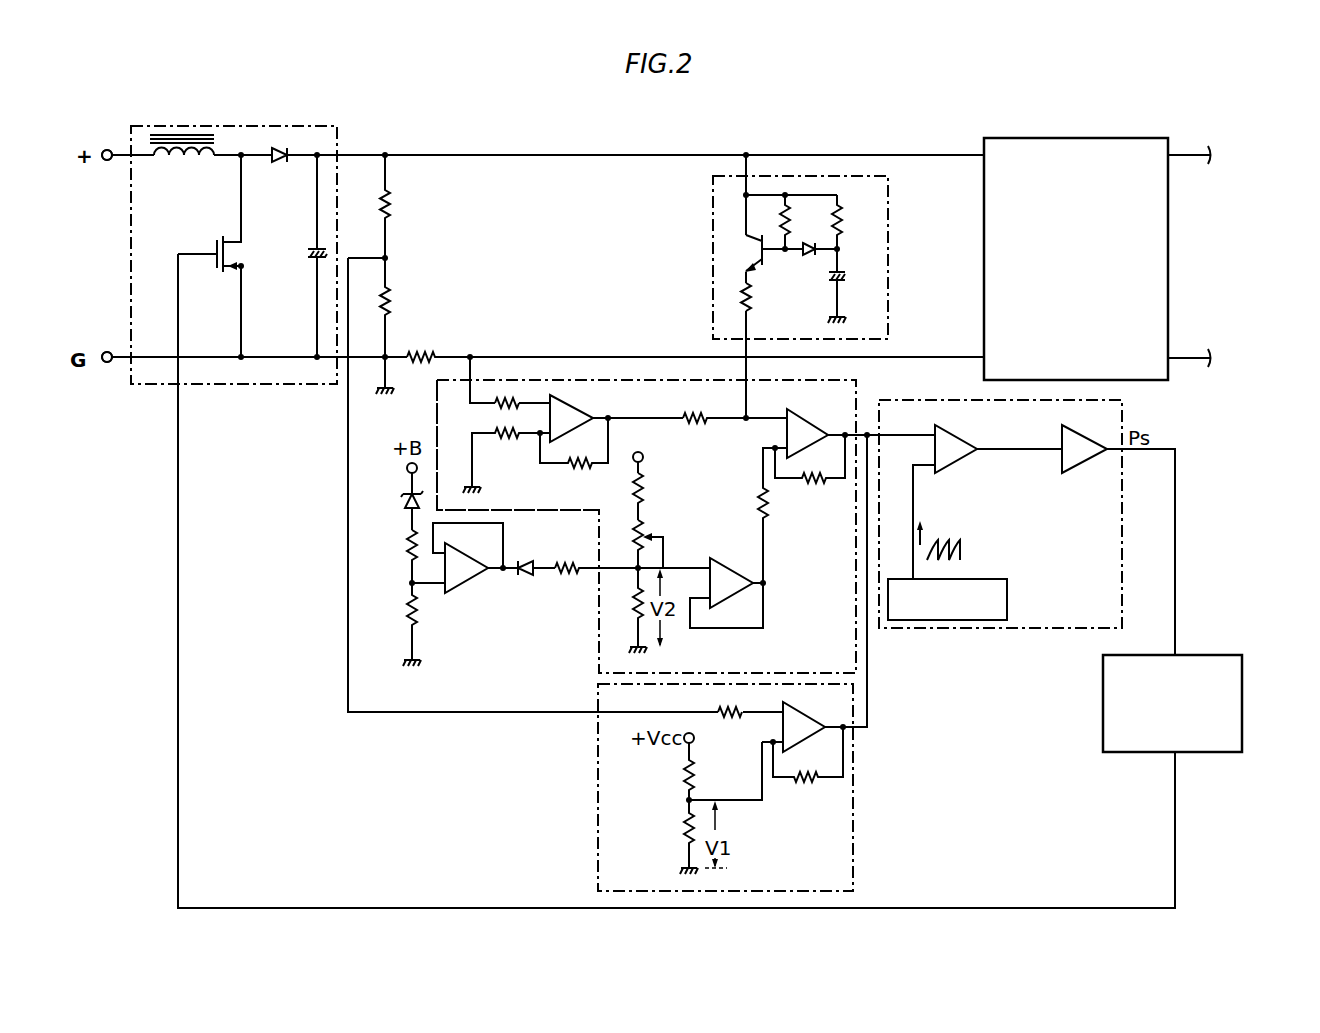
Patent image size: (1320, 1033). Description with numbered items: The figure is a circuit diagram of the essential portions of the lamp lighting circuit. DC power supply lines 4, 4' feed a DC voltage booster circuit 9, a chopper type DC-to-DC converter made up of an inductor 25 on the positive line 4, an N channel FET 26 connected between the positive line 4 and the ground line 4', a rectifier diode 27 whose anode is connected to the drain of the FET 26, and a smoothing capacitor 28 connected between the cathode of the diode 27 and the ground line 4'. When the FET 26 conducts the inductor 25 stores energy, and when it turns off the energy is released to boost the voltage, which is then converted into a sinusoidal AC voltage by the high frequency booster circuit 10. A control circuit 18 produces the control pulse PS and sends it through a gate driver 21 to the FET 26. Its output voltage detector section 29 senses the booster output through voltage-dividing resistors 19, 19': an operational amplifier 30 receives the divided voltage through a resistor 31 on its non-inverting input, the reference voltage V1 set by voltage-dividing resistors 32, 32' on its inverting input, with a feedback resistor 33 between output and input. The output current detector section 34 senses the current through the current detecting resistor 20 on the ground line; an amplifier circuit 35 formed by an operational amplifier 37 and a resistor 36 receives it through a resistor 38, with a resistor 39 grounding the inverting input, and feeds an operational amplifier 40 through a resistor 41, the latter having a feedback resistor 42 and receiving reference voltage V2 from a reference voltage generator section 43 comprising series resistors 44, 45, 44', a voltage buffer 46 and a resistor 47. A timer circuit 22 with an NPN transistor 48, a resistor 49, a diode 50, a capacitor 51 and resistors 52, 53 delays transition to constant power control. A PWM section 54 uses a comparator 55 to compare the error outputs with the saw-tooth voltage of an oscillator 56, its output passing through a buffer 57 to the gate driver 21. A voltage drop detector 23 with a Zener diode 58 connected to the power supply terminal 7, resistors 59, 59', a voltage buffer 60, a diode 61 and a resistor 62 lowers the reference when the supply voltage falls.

The positive line 4 is at (109, 123).
The ground line 4' is at (108, 401).
The power supply terminal 7 is at (406, 469).
The DC voltage booster circuit 9 is at (243, 126).
The high frequency booster circuit 10 is at (1085, 137).
The control circuit 18 is at (430, 757).
The voltage-dividing resistor 19 is at (412, 206).
The voltage-dividing resistor 19' is at (413, 326).
The current detecting resistor 20 is at (426, 352).
The gate driver 21 is at (1242, 688).
The timer circuit 22 is at (888, 236).
The voltage drop detector 23 is at (448, 626).
The inductor 25 is at (181, 162).
The N channel FET 26 is at (245, 249).
The rectifier diode 27 is at (283, 163).
The smoothing capacitor 28 is at (312, 262).
The output voltage detector section 29 is at (598, 800).
The operational amplifier 30 is at (778, 745).
The resistor 31 is at (731, 716).
The voltage-dividing resistor 32 is at (662, 774).
The voltage-dividing resistor 32' is at (663, 837).
The feedback resistor 33 is at (806, 784).
The output current detector section 34 is at (436, 398).
The amplifier circuit 35 is at (612, 418).
The resistor 36 is at (573, 466).
The operational amplifier 37 is at (565, 398).
The resistor 38 is at (495, 404).
The resistor 39 is at (512, 436).
The operational amplifier 40 is at (810, 424).
The resistor 41 is at (697, 424).
The feedback resistor 42 is at (815, 480).
The reference voltage generator section 43 is at (656, 508).
The resistor 44 is at (615, 496).
The resistor 44' is at (600, 624).
The variable resistor 45 is at (698, 536).
The voltage buffer 46 is at (733, 568).
The resistor 47 is at (768, 516).
The NPN transistor 48 is at (769, 257).
The resistor 49 is at (752, 309).
The diode 50 is at (812, 243).
The capacitor 51 is at (842, 281).
The resistor 52 is at (783, 225).
The resistor 53 is at (840, 226).
The PWM section 54 is at (1030, 630).
The comparator 55 is at (951, 438).
The oscillator 56 is at (1007, 590).
The buffer 57 is at (1082, 465).
The Zener diode 58 is at (408, 501).
The resistor 59 is at (389, 556).
The resistor 59' is at (389, 624).
The voltage buffer 60 is at (481, 586).
The diode 61 is at (523, 576).
The resistor 62 is at (566, 578).